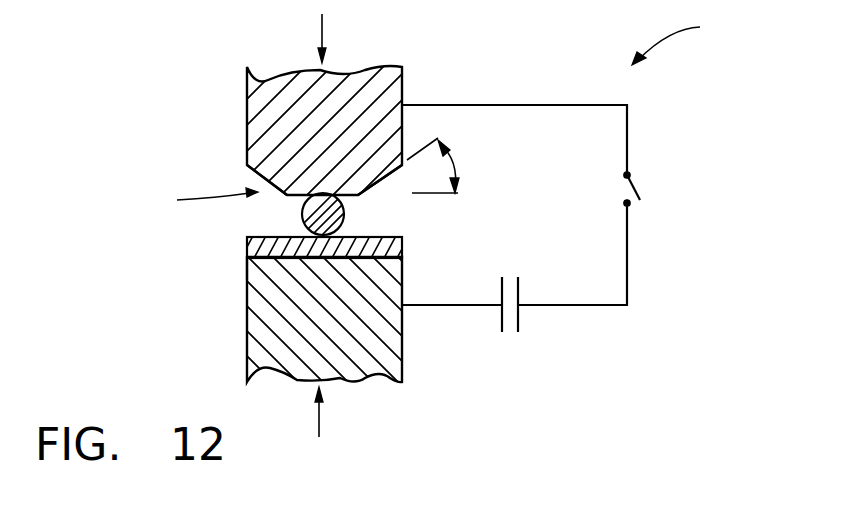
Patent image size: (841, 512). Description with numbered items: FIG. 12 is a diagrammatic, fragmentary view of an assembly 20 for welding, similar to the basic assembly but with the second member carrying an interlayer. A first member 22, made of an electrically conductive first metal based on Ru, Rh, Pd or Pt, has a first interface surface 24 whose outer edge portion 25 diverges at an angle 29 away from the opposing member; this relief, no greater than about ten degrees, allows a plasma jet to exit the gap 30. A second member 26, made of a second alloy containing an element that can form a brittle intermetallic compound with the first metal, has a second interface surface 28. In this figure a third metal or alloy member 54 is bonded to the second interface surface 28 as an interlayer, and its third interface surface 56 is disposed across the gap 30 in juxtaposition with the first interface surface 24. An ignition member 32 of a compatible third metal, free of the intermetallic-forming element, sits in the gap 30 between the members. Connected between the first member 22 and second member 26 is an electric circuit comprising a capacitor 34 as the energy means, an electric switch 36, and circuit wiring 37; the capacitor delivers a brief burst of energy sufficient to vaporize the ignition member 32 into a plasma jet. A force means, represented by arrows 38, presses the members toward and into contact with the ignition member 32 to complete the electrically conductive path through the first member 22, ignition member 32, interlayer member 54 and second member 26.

The assembly 20 is at (683, 39).
The first member 22 is at (404, 90).
The first interface surface 24 is at (202, 202).
The outer edge portion 25 is at (262, 183).
The second member 26 is at (382, 352).
The second interface surface 28 is at (247, 258).
The angle 29 is at (452, 166).
The gap 30 is at (370, 213).
The ignition member 32 is at (318, 218).
The capacitor 34 is at (520, 325).
The electric switch 36 is at (636, 190).
The circuit wiring 37 is at (505, 104).
The force means 38 is at (322, 22).
The third metal or alloy member 54 is at (246, 246).
The third interface surface 56 is at (282, 238).